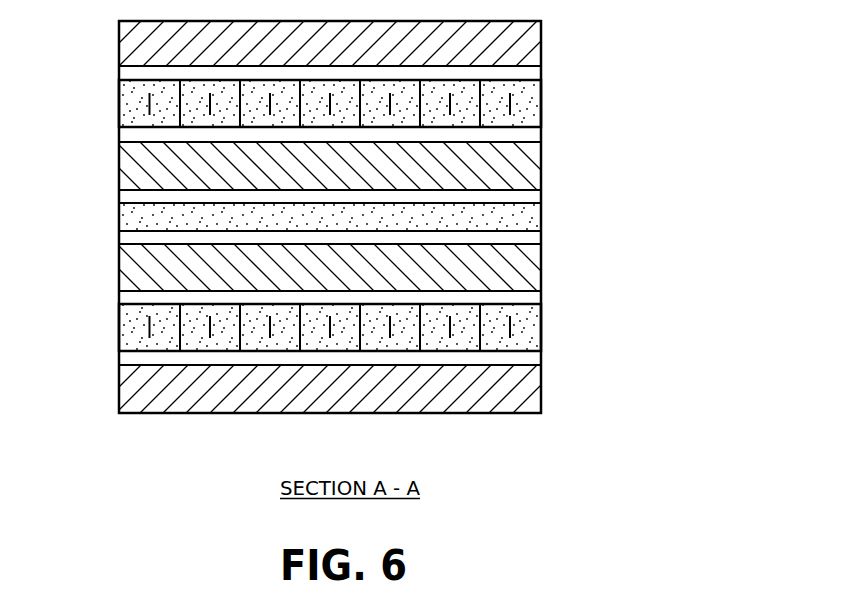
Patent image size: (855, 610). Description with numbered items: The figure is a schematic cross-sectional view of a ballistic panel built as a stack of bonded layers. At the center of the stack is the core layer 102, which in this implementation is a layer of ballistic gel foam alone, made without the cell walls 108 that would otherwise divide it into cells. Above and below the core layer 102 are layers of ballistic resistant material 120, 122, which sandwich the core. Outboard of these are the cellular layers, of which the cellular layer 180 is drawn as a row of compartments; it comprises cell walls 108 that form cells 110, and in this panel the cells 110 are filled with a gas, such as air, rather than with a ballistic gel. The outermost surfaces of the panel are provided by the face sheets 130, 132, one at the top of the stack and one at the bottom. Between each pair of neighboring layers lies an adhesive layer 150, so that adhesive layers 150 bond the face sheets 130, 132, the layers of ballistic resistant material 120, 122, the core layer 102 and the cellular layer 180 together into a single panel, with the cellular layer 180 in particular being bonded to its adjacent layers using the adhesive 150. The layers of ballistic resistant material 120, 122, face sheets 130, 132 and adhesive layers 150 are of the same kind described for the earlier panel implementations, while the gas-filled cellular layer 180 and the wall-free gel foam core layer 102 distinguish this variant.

The core layer 102 is at (541, 215).
The cell walls 108 is at (518, 106).
The cells 110 is at (518, 97).
The layer of ballistic resistant material 120 is at (541, 163).
The layer of ballistic resistant material 122 is at (541, 263).
The face sheet 130 is at (118, 43).
The face sheet 132 is at (118, 388).
The adhesive layer 150 is at (118, 72).
The cellular layer 180 is at (118, 106).